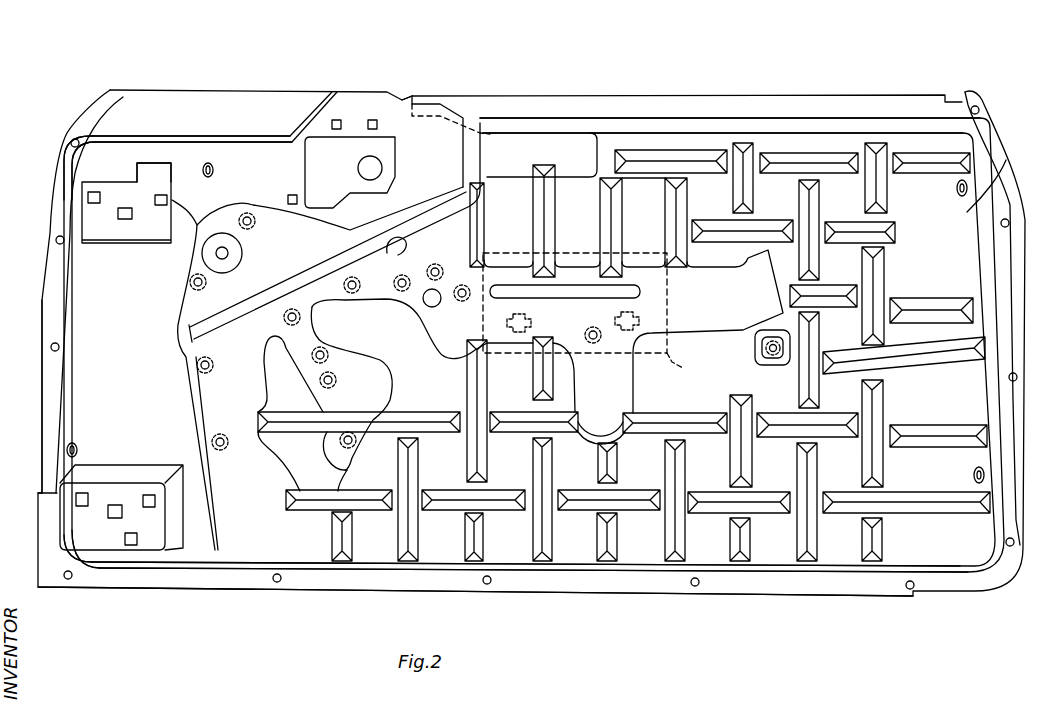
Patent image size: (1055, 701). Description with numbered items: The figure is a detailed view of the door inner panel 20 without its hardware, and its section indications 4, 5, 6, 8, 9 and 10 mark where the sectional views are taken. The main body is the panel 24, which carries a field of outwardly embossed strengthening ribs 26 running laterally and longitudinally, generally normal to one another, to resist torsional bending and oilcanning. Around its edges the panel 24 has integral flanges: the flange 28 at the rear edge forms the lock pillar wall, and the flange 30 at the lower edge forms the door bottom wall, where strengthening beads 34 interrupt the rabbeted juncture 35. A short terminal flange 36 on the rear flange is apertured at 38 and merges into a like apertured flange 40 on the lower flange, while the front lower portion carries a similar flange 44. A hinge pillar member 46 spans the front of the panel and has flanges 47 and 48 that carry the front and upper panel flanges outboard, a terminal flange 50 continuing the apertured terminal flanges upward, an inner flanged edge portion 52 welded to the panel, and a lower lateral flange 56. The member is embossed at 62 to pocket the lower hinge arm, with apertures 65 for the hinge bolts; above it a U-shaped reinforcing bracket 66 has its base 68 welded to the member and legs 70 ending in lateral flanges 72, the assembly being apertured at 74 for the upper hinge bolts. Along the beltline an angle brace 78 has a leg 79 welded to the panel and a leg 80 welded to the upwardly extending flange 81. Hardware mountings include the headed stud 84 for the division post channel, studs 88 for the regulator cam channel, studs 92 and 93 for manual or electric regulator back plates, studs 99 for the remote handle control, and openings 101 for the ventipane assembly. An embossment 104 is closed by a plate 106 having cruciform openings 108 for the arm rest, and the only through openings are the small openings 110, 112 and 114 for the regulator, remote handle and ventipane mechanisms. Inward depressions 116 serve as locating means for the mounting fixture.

The door inner panel 20 is at (1012, 314).
The panel 24 is at (967, 212).
The strengthening ribs 26 is at (533, 452).
The flange 28 is at (990, 248).
The flange 30 is at (634, 568).
The strengthening beads 34 is at (601, 531).
The rabbeted juncture 35 is at (380, 566).
The terminal flange 36 is at (998, 355).
The apertures 38 is at (55, 351).
The flange 40 is at (755, 589).
The flange 44 is at (50, 519).
The hinge pillar member 46 is at (212, 332).
The flange 47 is at (76, 290).
The flange 48 is at (210, 147).
The terminal flange 50 is at (53, 283).
The inner flanged edge portion 52 is at (392, 244).
The lower lateral flange 56 is at (117, 563).
The embossment 62 is at (167, 528).
The apertures 65 is at (148, 495).
The reinforcing bracket 66 is at (179, 206).
The base 68 is at (122, 239).
The legs 70 is at (93, 182).
The lateral flanges 72 is at (81, 220).
The apertures 74 is at (155, 200).
The beltline angle brace 78 is at (799, 92).
The leg 79 is at (860, 128).
The leg 80 is at (720, 112).
The upwardly extending flange 81 is at (405, 97).
The headed stud 84 is at (348, 443).
The studs 88 is at (598, 337).
The studs 92 is at (252, 223).
The studs 93 is at (292, 321).
The studs 99 is at (460, 291).
The openings 101 is at (341, 125).
The embossment 104 is at (693, 313).
The plate 106 is at (599, 318).
The cruciform openings 108 is at (520, 316).
The opening 110 is at (228, 255).
The opening 112 is at (431, 307).
The opening 114 is at (381, 173).
The inward depressions 116 is at (214, 167).
The section line 4- 4 is at (1027, 50).
The section line 5- 5 is at (497, 150).
The section line 6- 6 is at (262, 440).
The section line 8- 8 is at (1, 44).
The section line 9- 9 is at (137, 70).
The section line 10- 10 is at (240, 60).